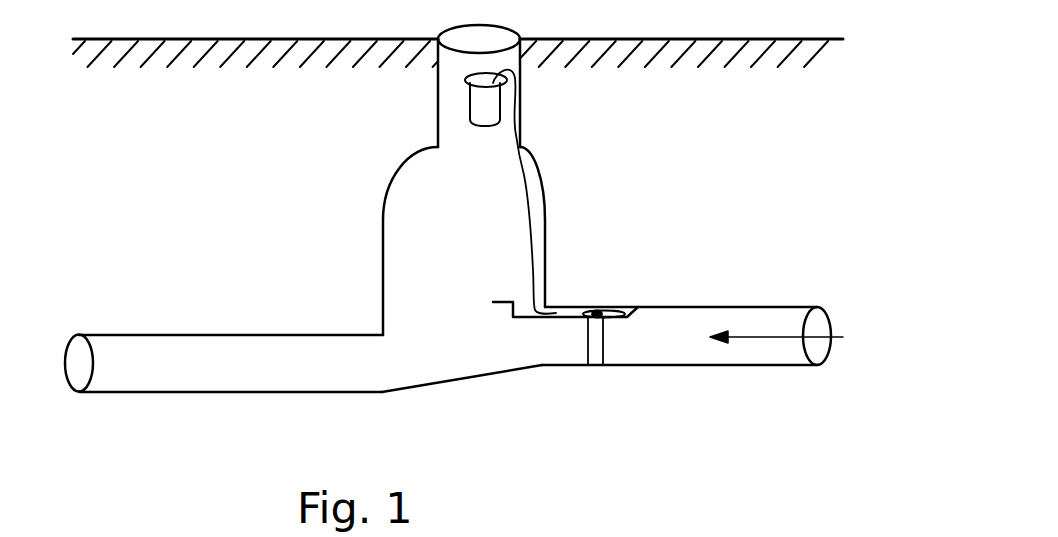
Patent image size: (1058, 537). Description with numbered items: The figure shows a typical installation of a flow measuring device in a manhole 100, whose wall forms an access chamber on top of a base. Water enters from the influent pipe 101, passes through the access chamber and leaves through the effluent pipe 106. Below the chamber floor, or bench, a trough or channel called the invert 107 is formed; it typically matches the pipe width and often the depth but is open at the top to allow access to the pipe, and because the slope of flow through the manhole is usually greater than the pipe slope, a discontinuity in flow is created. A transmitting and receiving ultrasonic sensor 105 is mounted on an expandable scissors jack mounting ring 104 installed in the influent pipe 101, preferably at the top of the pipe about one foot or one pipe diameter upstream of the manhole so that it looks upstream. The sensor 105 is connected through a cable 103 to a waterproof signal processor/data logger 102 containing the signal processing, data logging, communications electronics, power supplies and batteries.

The manhole 100 is at (438, 82).
The influent pipe 101 is at (648, 307).
The signal processor/data logger 102 is at (470, 105).
The cable 103 is at (520, 163).
The expandable scissors jack mounting ring 104 is at (587, 330).
The transmitting and receiving ultrasonic sensor 105 is at (623, 313).
The effluent pipe 106 is at (215, 387).
The invert 107 is at (490, 377).